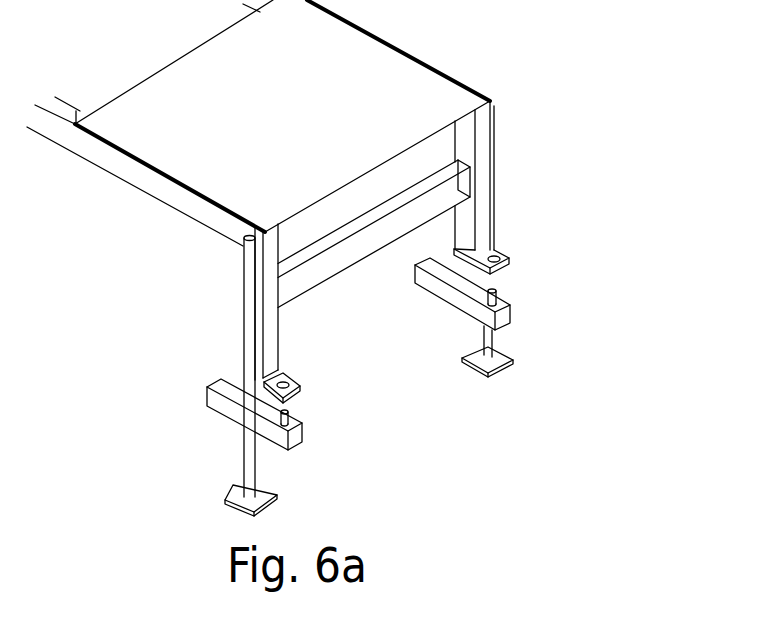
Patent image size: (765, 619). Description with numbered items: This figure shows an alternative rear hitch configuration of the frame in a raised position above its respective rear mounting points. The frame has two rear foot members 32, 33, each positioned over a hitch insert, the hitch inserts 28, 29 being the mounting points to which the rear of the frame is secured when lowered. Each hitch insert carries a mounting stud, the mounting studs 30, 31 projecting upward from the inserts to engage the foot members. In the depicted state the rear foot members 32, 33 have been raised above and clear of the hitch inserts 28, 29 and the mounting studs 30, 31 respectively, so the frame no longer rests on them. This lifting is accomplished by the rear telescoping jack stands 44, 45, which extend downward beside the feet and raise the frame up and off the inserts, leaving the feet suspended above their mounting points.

The hitch insert 28 is at (227, 410).
The hitch insert 29 is at (450, 293).
The mounting stud 30 is at (290, 418).
The mounting stud 31 is at (498, 297).
The rear foot member 32 is at (300, 387).
The rear foot member 33 is at (510, 261).
The rear telescoping jack stand 44 is at (243, 325).
The rear telescoping jack stand 45 is at (497, 170).